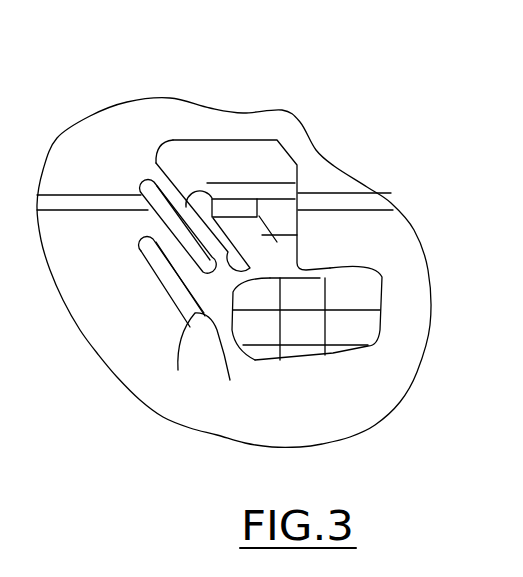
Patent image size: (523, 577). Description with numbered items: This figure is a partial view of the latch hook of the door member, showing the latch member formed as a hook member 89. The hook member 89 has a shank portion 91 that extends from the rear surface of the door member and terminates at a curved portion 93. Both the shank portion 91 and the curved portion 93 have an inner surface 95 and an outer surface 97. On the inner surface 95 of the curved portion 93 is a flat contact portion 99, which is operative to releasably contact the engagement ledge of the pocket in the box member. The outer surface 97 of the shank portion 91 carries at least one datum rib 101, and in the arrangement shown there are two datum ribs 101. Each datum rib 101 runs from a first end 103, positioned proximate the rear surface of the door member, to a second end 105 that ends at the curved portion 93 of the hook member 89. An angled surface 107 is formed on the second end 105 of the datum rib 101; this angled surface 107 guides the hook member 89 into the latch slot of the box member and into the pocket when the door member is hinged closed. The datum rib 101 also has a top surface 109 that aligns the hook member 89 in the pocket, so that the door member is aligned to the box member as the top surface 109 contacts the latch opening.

The hook member 89 is at (333, 177).
The shank portion 91 is at (262, 237).
The curved portion 93 is at (350, 353).
The inner surface 95 is at (273, 247).
The outer surface 97 is at (163, 277).
The flat contact portion 99 is at (320, 270).
The datum rib 101 is at (152, 178).
The first end 103 is at (153, 180).
The second end 105 is at (200, 270).
The angled surface 107 is at (258, 330).
The top surface 109 is at (150, 198).